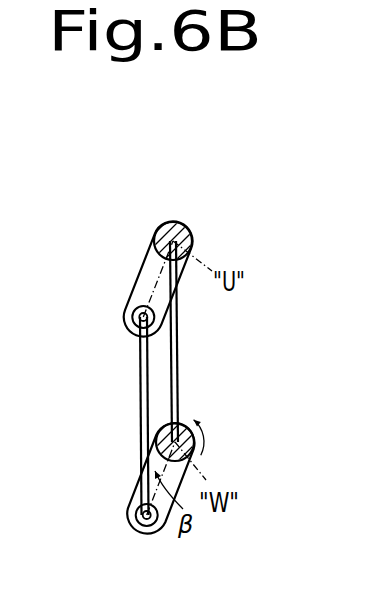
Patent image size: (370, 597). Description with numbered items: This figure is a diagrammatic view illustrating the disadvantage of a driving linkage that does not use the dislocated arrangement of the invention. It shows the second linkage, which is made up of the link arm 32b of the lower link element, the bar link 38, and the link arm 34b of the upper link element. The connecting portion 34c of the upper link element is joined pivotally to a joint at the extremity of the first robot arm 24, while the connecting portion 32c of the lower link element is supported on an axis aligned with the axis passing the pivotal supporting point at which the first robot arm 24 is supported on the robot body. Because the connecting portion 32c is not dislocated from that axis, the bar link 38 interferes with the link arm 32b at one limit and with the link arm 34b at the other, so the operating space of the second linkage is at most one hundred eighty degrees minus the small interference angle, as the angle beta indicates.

The first robot arm 24 is at (177, 340).
The second link arm 32b is at (136, 490).
The connecting portion 32c is at (187, 424).
The second link arm 34b is at (143, 264).
The connecting portion 34c is at (191, 235).
The bar link 38 is at (141, 383).